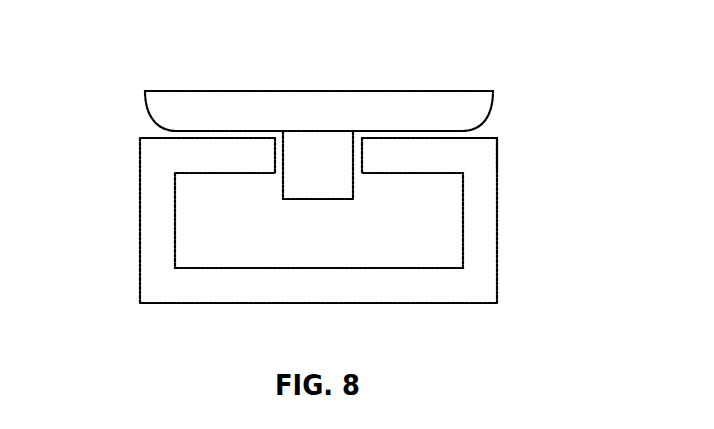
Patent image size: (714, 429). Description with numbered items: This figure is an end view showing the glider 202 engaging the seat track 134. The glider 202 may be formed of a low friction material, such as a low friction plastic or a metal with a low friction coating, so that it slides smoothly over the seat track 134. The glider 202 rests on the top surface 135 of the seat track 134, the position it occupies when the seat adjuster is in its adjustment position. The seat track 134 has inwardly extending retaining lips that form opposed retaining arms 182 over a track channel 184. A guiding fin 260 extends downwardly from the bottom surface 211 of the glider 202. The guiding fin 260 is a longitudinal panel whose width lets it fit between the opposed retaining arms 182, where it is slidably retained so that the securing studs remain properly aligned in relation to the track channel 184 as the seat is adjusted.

The seat track 134 is at (497, 220).
The top surface 135 is at (487, 138).
The retaining arms 182 is at (147, 138).
The track channel 184 is at (420, 240).
The glider 202 is at (458, 91).
The bottom surface 211 is at (392, 131).
The guiding fin 260 is at (283, 200).